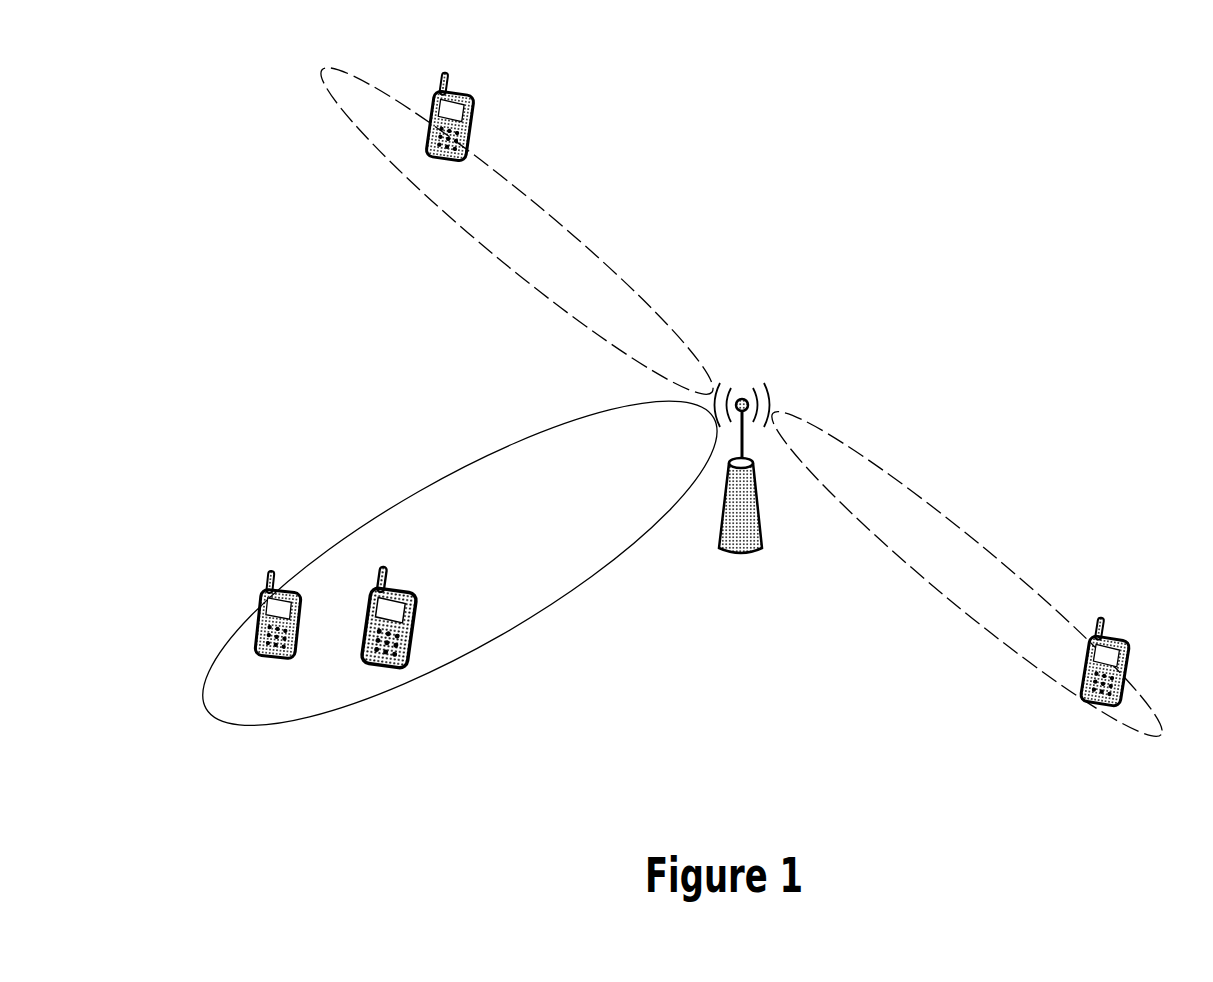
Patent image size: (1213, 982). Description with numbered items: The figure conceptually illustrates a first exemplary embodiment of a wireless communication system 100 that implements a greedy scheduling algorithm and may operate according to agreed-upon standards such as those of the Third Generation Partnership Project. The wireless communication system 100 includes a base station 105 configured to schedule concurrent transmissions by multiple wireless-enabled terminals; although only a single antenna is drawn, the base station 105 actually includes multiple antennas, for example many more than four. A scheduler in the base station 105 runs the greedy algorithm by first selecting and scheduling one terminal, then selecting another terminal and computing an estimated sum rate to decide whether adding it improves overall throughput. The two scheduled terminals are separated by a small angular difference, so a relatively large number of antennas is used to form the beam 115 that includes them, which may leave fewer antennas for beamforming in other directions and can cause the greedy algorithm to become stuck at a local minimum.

The wireless communication system 100 is at (1015, 176).
The base station 105 is at (742, 553).
The beam 115 is at (428, 480).